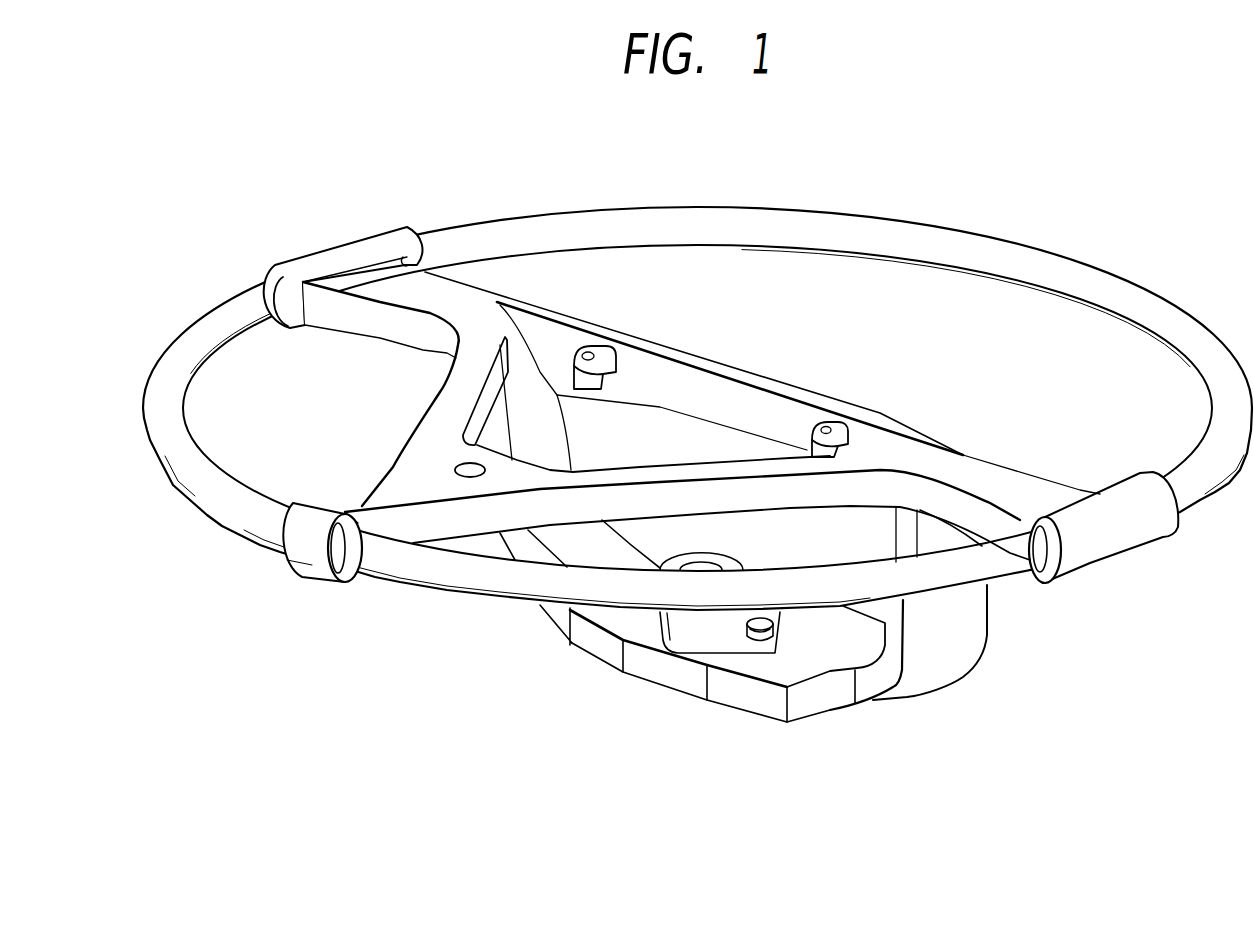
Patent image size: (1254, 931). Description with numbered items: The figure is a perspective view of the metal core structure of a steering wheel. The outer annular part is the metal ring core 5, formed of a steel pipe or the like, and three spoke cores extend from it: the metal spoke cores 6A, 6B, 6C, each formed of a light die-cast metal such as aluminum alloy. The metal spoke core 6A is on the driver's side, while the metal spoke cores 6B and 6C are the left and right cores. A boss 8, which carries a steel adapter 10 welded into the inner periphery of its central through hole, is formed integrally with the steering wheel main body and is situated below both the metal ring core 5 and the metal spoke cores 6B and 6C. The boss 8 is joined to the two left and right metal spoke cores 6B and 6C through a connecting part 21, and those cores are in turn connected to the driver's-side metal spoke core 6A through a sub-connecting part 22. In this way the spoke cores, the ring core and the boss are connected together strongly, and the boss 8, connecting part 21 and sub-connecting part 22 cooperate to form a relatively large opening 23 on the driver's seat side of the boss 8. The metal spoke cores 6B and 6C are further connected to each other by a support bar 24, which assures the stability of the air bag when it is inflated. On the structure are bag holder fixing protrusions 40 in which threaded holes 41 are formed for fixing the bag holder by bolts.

The metal ring core 5 is at (985, 248).
The metal spoke core 6A is at (360, 507).
The metal spoke core 6B is at (380, 315).
The metal spoke core 6C is at (1030, 473).
The boss 8 is at (767, 707).
The adapter 10 is at (783, 623).
The connecting part 21 is at (540, 397).
The sub-connecting part 22 is at (483, 408).
The opening 23 is at (647, 617).
The support bar 24 is at (850, 408).
The bag holder fixing protrusions 40 is at (612, 345).
The threaded holes 41 is at (588, 350).